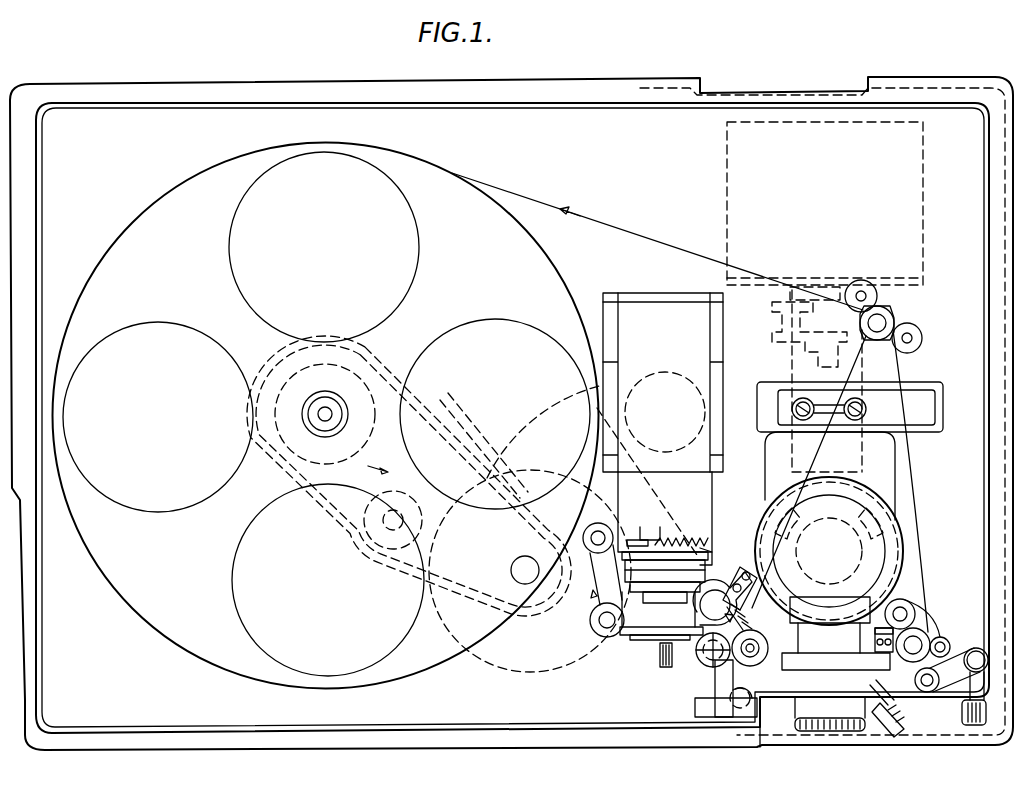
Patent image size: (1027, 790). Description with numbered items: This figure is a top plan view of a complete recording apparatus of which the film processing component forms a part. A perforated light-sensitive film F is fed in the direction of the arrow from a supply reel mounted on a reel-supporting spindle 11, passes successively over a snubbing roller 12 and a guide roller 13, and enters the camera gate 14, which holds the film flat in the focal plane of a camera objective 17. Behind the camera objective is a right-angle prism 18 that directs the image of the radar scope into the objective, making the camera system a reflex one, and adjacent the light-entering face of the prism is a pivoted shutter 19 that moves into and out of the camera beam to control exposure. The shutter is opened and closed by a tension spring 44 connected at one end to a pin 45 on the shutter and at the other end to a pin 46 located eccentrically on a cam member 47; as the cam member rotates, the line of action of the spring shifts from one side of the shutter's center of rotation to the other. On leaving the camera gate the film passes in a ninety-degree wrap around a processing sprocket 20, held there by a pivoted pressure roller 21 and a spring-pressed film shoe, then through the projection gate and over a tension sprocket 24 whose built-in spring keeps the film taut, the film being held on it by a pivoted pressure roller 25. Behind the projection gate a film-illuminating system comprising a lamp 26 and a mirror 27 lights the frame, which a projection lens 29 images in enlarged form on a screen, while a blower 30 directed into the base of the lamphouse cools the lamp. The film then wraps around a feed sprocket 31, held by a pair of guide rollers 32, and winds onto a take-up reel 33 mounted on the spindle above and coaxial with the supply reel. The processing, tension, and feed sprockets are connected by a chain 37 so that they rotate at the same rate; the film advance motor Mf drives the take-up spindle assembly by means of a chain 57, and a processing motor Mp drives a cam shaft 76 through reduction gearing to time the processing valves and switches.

The reel-supporting spindle 11 is at (329, 417).
The snubbing roller 12 is at (600, 523).
The guide roller 13 is at (590, 627).
The camera gate 14 is at (623, 632).
The camera objective 17 is at (720, 572).
The right-angle prism 18 is at (660, 424).
The pivoted shutter 19 is at (550, 412).
The processing sprocket 20 is at (722, 665).
The pivoted pressure roller 21 is at (702, 664).
The tension sprocket 24 is at (912, 662).
The pivoted pressure roller 25 is at (950, 646).
The lamp 26 is at (848, 522).
The mirror 27 is at (797, 513).
The projection lens 29 is at (828, 735).
The blower 30 is at (790, 375).
The feed sprocket 31 is at (895, 322).
The guide rollers 32 is at (870, 290).
The take-up reel 33 is at (150, 621).
The chain 37 is at (792, 476).
The tension spring 44 is at (670, 542).
The pin 45 is at (641, 533).
The pin 46 is at (706, 552).
The cam member 47 is at (645, 543).
The chain 57 is at (480, 592).
The cam shaft 76 is at (795, 350).
The perforated light-sensitive film F is at (630, 228).
The processing motor Mp is at (923, 170).
The film advance motor Mf is at (511, 672).